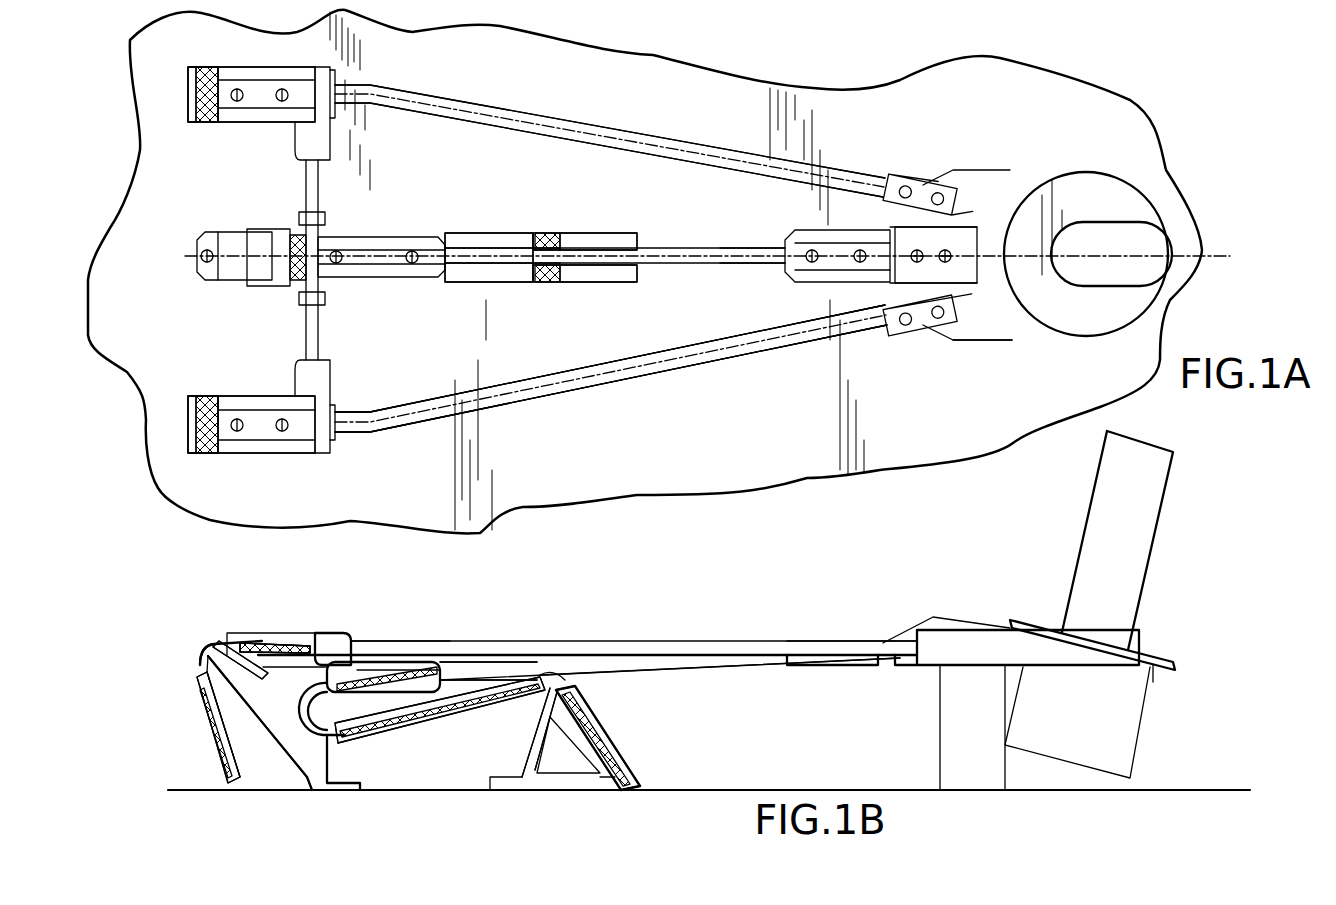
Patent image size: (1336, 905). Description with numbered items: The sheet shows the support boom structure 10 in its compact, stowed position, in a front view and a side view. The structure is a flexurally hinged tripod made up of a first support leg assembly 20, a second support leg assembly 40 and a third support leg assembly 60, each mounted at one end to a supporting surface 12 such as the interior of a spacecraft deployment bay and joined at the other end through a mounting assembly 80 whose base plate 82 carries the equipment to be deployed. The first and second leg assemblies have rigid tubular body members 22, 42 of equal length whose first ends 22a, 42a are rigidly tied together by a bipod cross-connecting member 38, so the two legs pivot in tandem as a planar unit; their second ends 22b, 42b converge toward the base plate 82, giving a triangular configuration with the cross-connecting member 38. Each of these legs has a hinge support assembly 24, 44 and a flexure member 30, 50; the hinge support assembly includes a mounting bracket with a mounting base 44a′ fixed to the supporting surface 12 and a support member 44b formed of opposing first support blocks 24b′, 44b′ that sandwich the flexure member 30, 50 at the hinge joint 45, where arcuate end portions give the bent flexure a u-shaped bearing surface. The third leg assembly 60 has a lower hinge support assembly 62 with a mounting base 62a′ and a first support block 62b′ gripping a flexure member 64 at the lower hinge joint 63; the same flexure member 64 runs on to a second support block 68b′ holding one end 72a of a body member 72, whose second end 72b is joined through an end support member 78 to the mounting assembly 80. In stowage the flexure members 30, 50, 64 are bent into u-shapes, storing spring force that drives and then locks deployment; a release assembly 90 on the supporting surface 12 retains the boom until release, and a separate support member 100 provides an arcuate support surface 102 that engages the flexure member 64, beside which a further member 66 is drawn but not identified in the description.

In FIG. 1A, the support boom structure 10 is at (790, 60).
In FIG. 1B, the support boom structure 10 is at (778, 592).
In FIG. 1A, the supporting surface 12 is at (460, 58).
In FIG. 1B, the supporting surface 12 is at (1232, 785).
In FIG. 1A, the first support leg assembly 20 is at (704, 128).
In FIG. 1A, the elongated body member 22 is at (560, 128).
In FIG. 1A, the first end 22a is at (345, 100).
In FIG. 1A, the second end 22b is at (872, 165).
In FIG. 1A, the hinge support assembly 24 is at (260, 50).
In FIG. 1A, the first support block 24b′ is at (237, 112).
In FIG. 1A, the flexure member 30 is at (205, 122).
In FIG. 1B, the flexure member 30 is at (210, 643).
In FIG. 1A, the bipod cross-connecting member 38 is at (322, 148).
In FIG. 1B, the bipod cross-connecting member 38 is at (328, 632).
In FIG. 1A, the second support leg assembly 40 is at (683, 412).
In FIG. 1A, the elongated body member 42 is at (565, 385).
In FIG. 1B, the elongated body member 42 is at (528, 638).
In FIG. 1A, the first end 42a is at (345, 415).
In FIG. 1B, the first end 42a is at (372, 640).
In FIG. 1A, the second end 42b is at (875, 335).
In FIG. 1B, the second end 42b is at (895, 645).
In FIG. 1A, the hinge support assembly 44 is at (288, 482).
In FIG. 1B, the hinge support assembly 44 is at (185, 690).
In FIG. 1B, the mounting base 44a′ is at (280, 775).
In FIG. 1B, the support member 44b is at (266, 628).
In FIG. 1A, the first support block 44b′ is at (268, 420).
In FIG. 1B, the first support block 44b′ is at (238, 635).
In FIG. 1B, the hinge joint 45 is at (205, 655).
In FIG. 1A, the flexure member 50 is at (212, 450).
In FIG. 1A, the third support leg assembly 60 is at (600, 205).
In FIG. 1A, the lower hinge support assembly 62 is at (552, 292).
In FIG. 1B, the lower hinge support assembly 62 is at (635, 750).
In FIG. 1B, the mounting base 62a′ is at (590, 790).
In FIG. 1A, the first support block 62b′ is at (482, 233).
In FIG. 1B, the first support block 62b′ is at (555, 645).
In FIG. 1B, the hinge joint 63 is at (565, 680).
In FIG. 1A, the flexure member 64 is at (297, 236).
In FIG. 1B, the flexure member 64 is at (590, 738).
In FIG. 1B, the sloped support bar 66 is at (430, 722).
In FIG. 1B, the second support block 68b′ is at (405, 665).
In FIG. 1A, the body member 72 is at (660, 268).
In FIG. 1B, the body member 72 is at (705, 670).
In FIG. 1A, the one end 72a is at (485, 265).
In FIG. 1B, the one end 72a is at (465, 655).
In FIG. 1A, the second end 72b is at (790, 257).
In FIG. 1B, the second end 72b is at (787, 665).
In FIG. 1A, the end support member 78 is at (942, 237).
In FIG. 1B, the end support member 78 is at (950, 615).
In FIG. 1A, the mounting assembly 80 is at (1072, 162).
In FIG. 1B, the mounting assembly 80 is at (1175, 640).
In FIG. 1A, the base plate 82 is at (1000, 342).
In FIG. 1B, the base plate 82 is at (977, 640).
In FIG. 1B, the release assembly 90 is at (930, 765).
In FIG. 1A, the support member 100 is at (237, 280).
In FIG. 1B, the support member 100 is at (340, 762).
In FIG. 1B, the arcuate support surface 102 is at (312, 740).